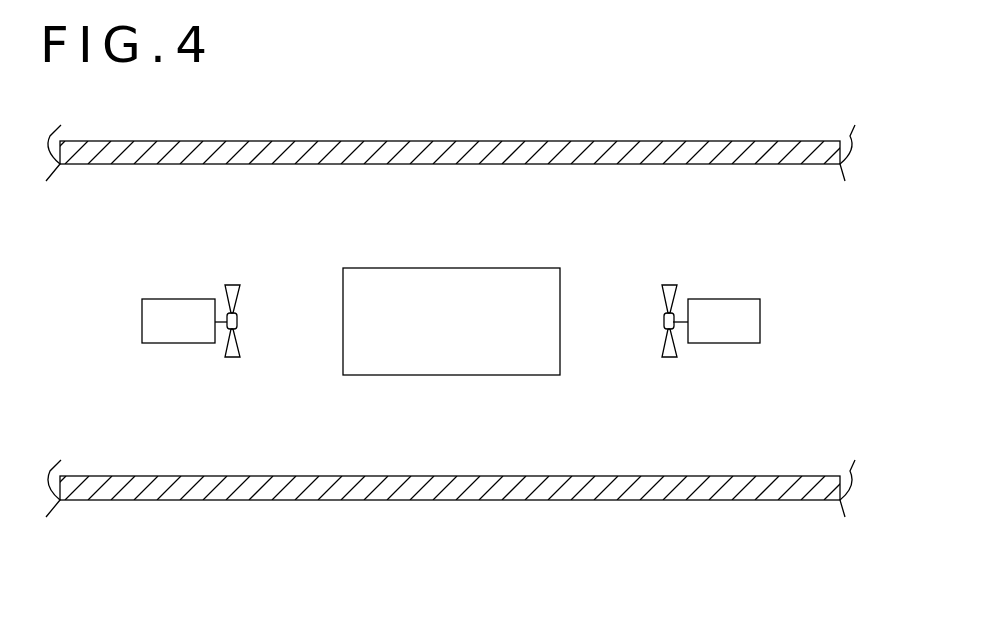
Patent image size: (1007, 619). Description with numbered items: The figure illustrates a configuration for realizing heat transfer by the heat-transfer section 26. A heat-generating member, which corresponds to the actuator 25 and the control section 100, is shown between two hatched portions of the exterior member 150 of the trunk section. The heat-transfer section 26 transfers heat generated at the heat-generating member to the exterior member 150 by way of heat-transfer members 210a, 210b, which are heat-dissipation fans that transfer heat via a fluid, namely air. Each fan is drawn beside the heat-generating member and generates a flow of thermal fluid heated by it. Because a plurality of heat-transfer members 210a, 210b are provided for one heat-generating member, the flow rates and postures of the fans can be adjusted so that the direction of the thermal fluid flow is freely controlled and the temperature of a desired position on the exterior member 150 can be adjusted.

The exterior member 150 is at (653, 141).
The actuator 25 is at (451, 288).
The control section 100 is at (450, 266).
The heat-transfer section 26 is at (170, 273).
The heat-transfer member 210a is at (177, 345).
The heat-transfer member 210b is at (722, 345).